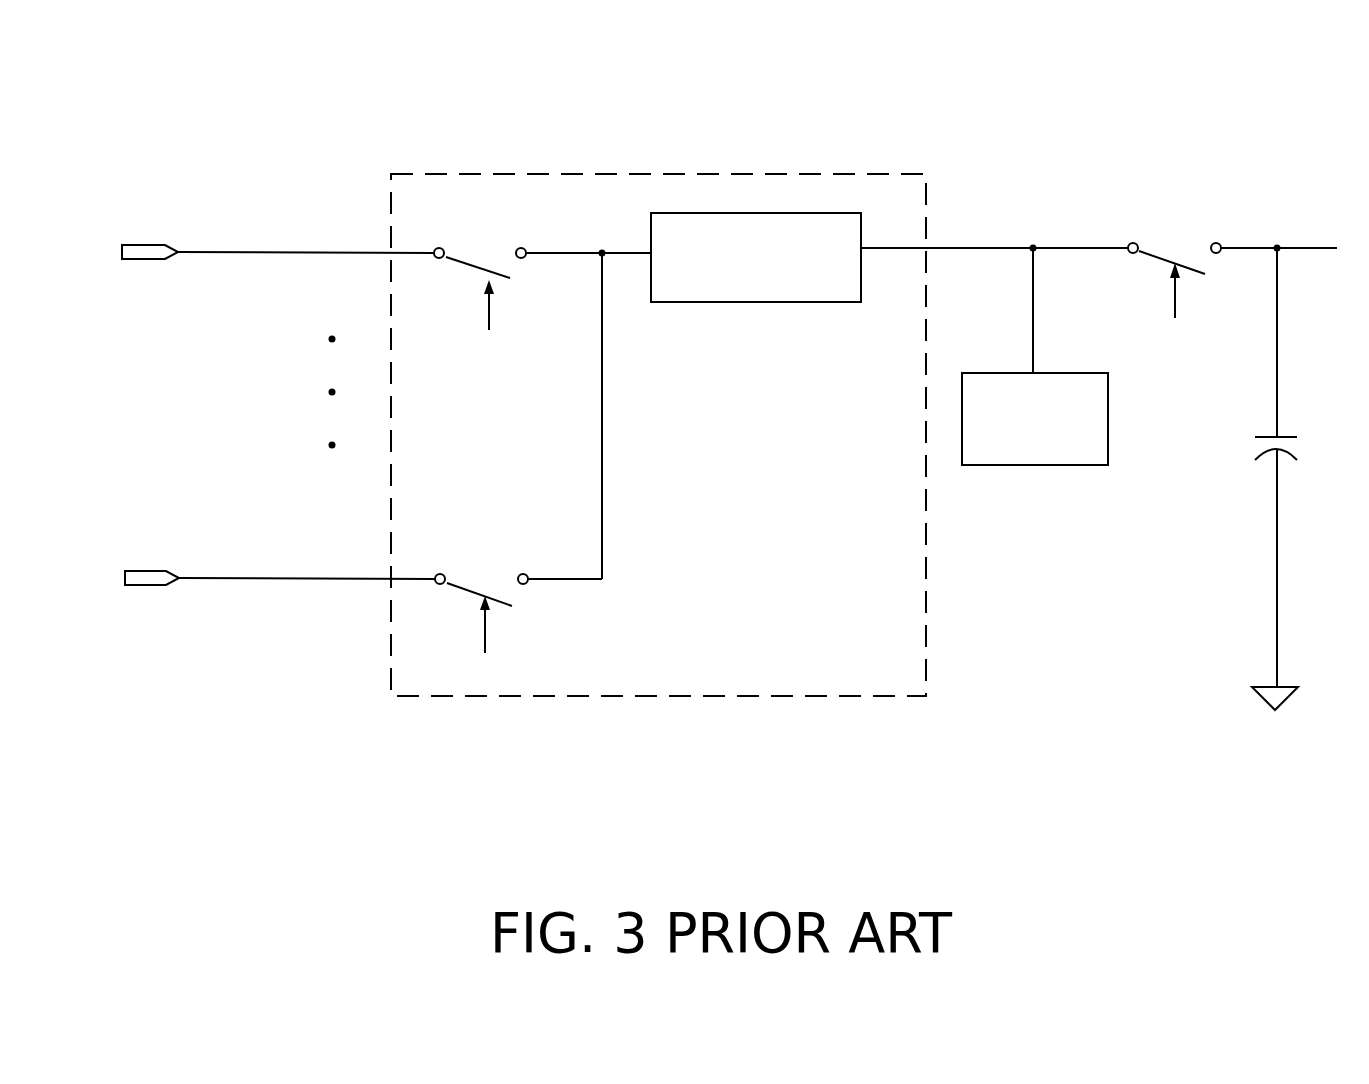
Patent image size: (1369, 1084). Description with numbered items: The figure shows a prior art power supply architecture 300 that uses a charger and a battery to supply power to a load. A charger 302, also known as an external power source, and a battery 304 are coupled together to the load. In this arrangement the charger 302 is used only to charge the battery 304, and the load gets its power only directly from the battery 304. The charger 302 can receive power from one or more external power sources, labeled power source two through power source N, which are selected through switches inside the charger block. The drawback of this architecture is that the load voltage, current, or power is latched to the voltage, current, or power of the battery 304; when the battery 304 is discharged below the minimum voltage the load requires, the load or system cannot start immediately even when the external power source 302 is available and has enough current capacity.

The power supply architecture 300 is at (142, 123).
The charger 302 is at (650, 173).
The battery 304 is at (976, 373).